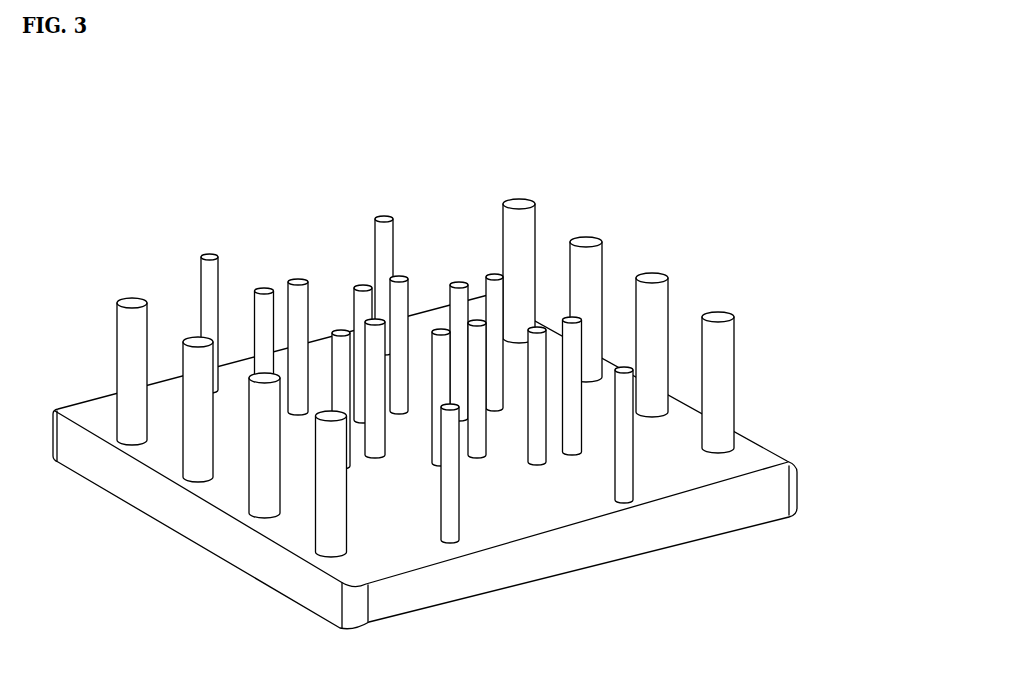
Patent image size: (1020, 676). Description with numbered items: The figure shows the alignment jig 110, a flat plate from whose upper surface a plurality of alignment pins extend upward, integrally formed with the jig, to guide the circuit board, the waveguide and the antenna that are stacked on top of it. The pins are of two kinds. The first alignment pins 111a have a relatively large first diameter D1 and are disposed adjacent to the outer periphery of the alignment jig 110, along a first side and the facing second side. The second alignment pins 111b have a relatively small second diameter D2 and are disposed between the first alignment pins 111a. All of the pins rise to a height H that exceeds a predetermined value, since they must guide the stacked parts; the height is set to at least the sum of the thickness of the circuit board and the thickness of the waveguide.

The alignment jig 110 is at (798, 491).
The first alignment pins 111a is at (653, 274).
The second alignment pins 111b is at (211, 253).
The first diameter D1 is at (567, 154).
The second diameter D2 is at (393, 213).
The height of pin H is at (736, 317).